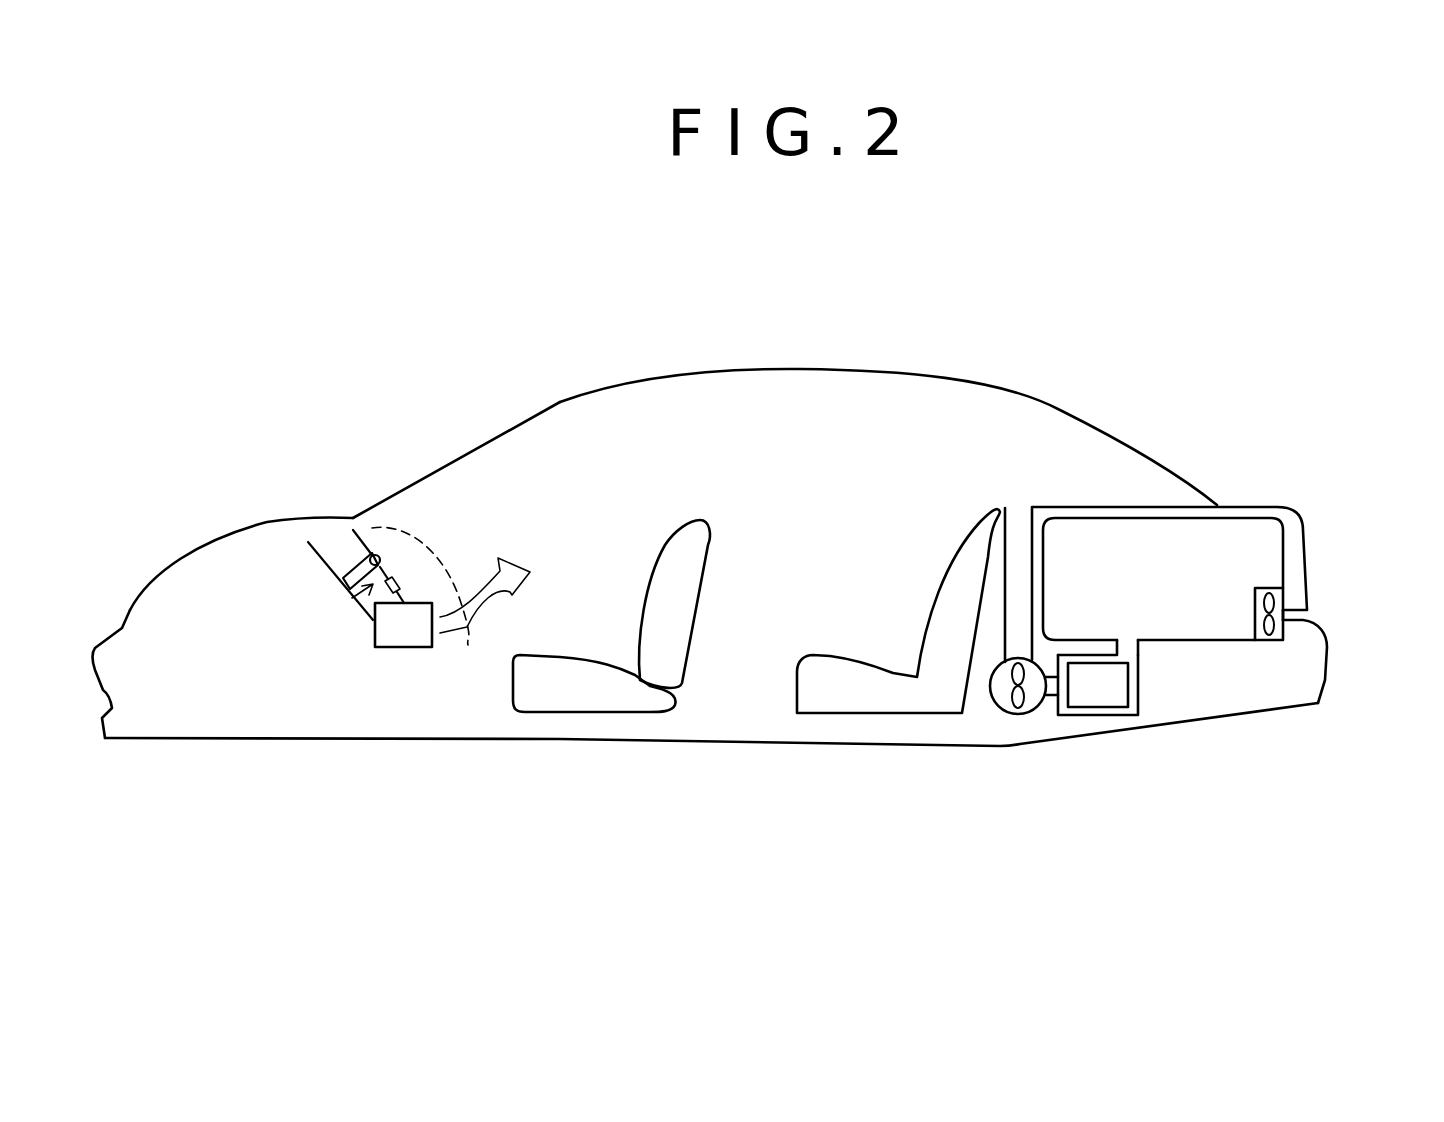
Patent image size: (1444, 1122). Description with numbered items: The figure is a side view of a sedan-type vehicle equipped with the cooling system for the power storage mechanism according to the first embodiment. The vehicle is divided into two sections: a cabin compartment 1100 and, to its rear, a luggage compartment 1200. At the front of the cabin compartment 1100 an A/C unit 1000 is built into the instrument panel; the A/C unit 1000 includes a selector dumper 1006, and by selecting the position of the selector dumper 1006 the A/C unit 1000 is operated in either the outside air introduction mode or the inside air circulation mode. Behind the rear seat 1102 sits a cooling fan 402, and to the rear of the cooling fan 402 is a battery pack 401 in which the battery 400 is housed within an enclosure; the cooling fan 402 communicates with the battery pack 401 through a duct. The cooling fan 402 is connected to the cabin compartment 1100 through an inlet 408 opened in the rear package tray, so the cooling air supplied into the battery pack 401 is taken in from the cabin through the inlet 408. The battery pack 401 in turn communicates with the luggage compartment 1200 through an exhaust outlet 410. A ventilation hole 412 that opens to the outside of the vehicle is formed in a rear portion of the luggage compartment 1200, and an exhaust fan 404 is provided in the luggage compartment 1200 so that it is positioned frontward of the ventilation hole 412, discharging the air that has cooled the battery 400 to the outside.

The cabin compartment 1100 is at (760, 444).
The rear seat 1102 is at (858, 715).
The selector dumper 1006 is at (360, 594).
The A/C unit 1000 is at (403, 647).
The luggage compartment 1200 is at (1219, 569).
The battery 400 is at (1130, 687).
The battery pack 401 is at (1082, 715).
The cooling fan 402 is at (1002, 714).
The exhaust fan 404 is at (1268, 640).
The inlet 408 is at (1017, 506).
The exhaust outlet 410 is at (1125, 638).
The ventilation hole 412 is at (1313, 612).